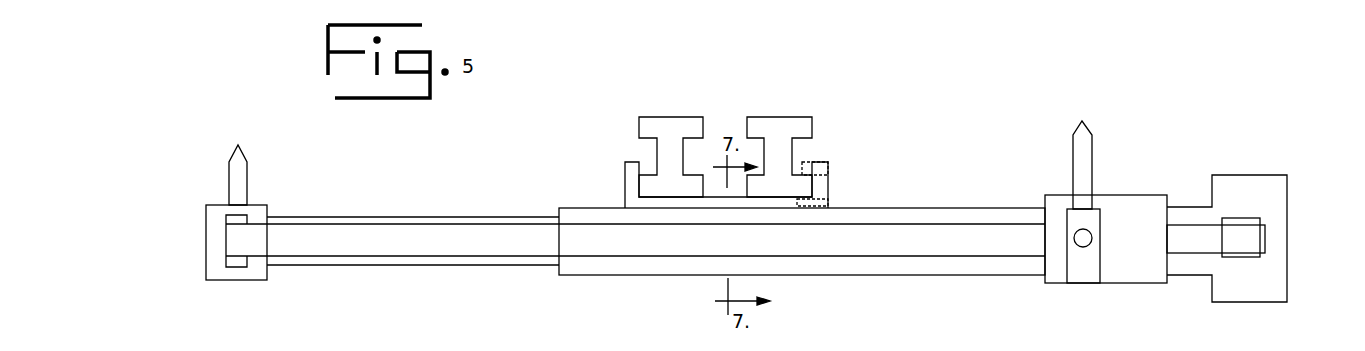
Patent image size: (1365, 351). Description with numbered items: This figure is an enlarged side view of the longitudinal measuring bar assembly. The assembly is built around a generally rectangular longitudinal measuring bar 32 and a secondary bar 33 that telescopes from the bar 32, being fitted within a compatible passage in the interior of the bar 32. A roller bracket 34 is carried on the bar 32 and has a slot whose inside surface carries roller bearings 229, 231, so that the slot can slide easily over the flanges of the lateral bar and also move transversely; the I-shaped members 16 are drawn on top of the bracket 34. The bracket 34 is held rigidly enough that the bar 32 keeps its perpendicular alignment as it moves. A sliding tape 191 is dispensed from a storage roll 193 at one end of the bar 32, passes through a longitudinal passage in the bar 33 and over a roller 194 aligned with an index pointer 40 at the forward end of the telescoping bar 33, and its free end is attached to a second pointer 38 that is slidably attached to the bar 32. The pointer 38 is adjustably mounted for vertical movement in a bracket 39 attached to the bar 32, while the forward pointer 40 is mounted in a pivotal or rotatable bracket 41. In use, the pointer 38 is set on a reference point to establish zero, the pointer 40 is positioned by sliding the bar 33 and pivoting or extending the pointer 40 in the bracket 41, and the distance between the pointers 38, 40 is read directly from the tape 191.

The I-shaped members 16 is at (812, 125).
The longitudinal measuring bar 32 is at (890, 208).
The secondary bar 33 is at (407, 217).
The roller bracket 34 is at (830, 183).
The second pointer 38 is at (1085, 163).
The bracket 39 is at (1132, 278).
The index pointer 40 is at (242, 170).
The pivotal bracket 41 is at (206, 273).
The sliding tape 191 is at (368, 253).
The storage roll 193 is at (1260, 232).
The roller 194 is at (225, 220).
The roller bearing 229 is at (803, 162).
The roller bearing 231 is at (798, 208).